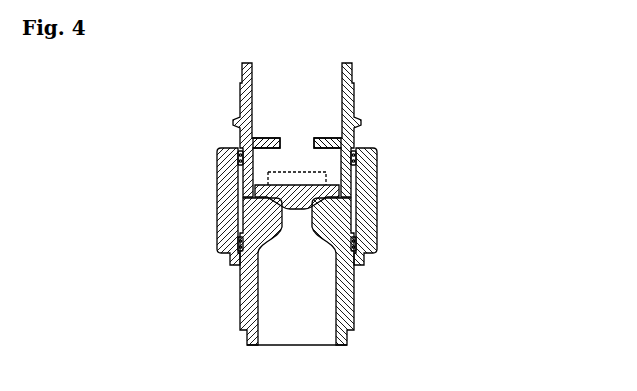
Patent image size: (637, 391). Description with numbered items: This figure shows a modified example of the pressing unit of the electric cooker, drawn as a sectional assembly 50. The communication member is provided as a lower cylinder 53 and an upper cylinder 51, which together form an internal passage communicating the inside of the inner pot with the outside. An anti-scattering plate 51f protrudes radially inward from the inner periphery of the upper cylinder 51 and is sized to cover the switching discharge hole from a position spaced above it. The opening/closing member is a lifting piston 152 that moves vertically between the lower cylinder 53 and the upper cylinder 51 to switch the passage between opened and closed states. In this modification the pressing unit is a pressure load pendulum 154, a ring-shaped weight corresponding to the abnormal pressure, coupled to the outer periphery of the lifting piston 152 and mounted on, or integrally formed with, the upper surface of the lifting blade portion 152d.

The connector assembly 50 is at (150, 63).
The upper cylinder 51 is at (236, 109).
The anti-scattering plate 51f is at (328, 142).
The lifting piston 152 is at (215, 245).
The lifting blade portion 152d is at (378, 256).
The pressure load pendulum 154 is at (377, 199).
The lower cylinder 53 is at (237, 302).